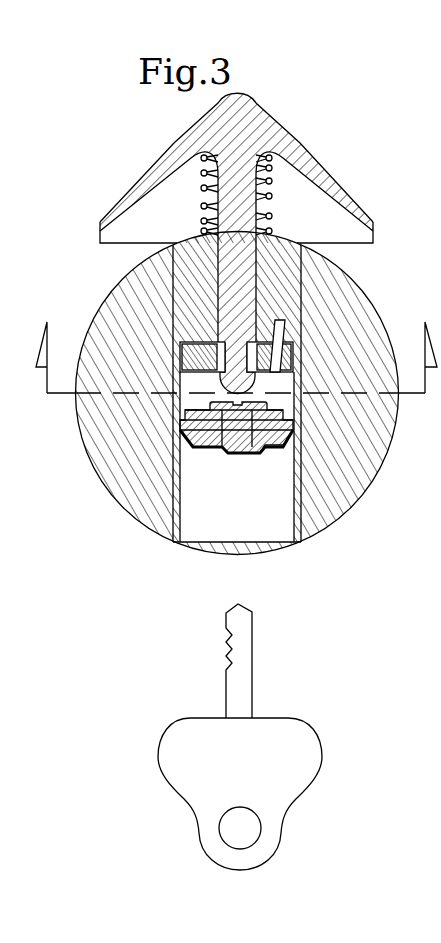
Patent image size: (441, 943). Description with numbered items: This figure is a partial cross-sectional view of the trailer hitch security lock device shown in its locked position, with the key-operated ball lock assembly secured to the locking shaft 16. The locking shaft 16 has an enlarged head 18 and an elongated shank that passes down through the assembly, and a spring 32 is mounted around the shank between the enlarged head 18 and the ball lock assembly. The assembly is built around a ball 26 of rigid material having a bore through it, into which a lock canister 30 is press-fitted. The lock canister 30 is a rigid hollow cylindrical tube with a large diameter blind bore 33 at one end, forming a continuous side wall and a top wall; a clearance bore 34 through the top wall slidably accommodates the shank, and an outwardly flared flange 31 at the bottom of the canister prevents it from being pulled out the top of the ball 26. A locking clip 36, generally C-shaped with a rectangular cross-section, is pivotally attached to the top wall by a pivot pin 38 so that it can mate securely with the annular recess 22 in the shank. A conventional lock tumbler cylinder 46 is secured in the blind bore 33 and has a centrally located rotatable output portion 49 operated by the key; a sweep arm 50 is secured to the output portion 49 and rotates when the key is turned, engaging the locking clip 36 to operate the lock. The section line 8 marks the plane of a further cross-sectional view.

The section line 8- 8 is at (234, 330).
The locking shaft 16 is at (279, 116).
The enlarged head 18 is at (290, 152).
The annular recess 22 is at (225, 365).
The ball 26 is at (391, 441).
The lock canister 30 is at (197, 310).
The outwardly flared flange 31 is at (170, 539).
The spring 32 is at (200, 186).
The blind bore 33 is at (293, 497).
The clearance bore 34 is at (247, 272).
The locking clip 36 is at (178, 348).
The pivot pin 38 is at (283, 330).
The lock tumbler cylinder 46 is at (270, 453).
The rotatable output portion 49 is at (217, 448).
The sweep arm 50 is at (182, 423).